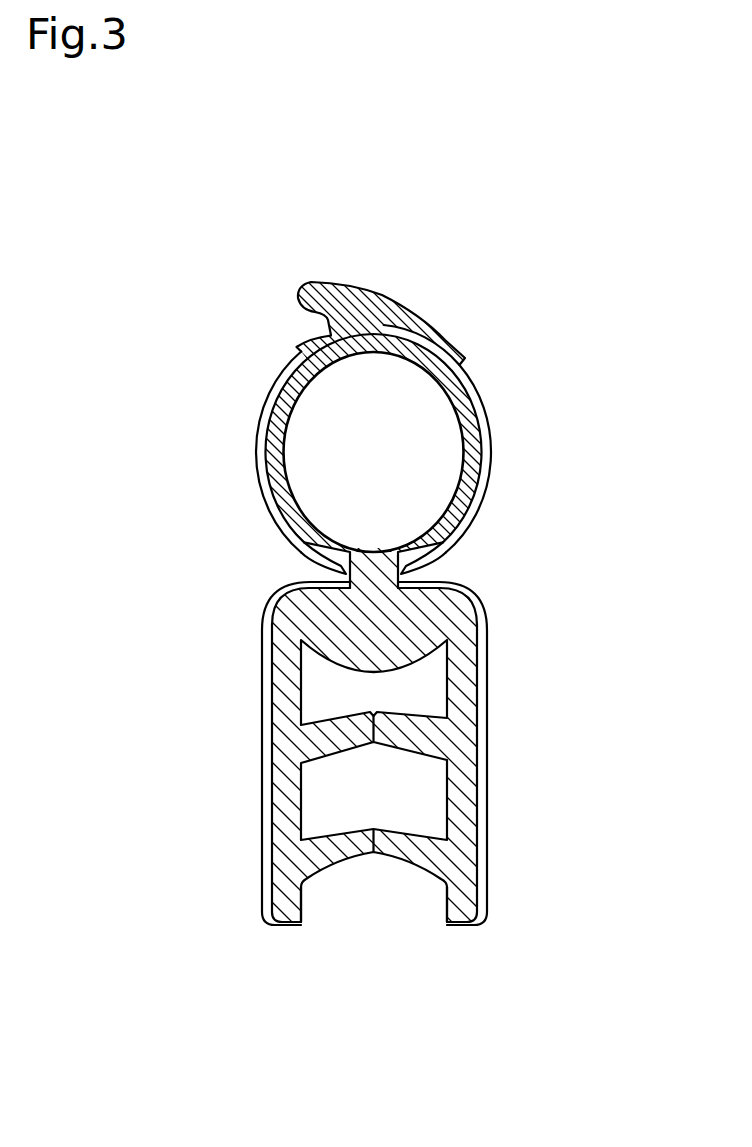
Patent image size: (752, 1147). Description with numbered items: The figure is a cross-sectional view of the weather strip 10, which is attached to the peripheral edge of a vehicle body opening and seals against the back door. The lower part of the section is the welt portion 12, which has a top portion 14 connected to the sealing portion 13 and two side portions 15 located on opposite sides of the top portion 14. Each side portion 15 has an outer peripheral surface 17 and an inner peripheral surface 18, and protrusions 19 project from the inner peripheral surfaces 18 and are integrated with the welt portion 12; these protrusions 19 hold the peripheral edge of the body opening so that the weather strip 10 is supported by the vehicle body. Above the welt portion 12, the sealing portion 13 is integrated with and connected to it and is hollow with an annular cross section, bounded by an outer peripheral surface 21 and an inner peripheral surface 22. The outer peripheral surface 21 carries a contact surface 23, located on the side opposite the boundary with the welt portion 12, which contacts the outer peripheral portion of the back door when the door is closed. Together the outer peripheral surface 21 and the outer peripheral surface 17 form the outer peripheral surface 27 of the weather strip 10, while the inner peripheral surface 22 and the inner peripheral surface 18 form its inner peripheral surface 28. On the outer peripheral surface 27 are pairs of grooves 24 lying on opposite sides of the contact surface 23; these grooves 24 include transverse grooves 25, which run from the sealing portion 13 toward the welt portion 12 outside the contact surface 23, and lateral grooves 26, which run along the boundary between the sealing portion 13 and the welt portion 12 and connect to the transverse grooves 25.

The weather strip 10 is at (273, 245).
The welt portion 12 is at (293, 608).
The sealing portion 13 is at (303, 352).
The top portion 14 is at (447, 615).
The side portions 15 is at (288, 772).
The outer peripheral surface 17 is at (263, 660).
The inner peripheral surface 18 is at (305, 692).
The protrusions 19 is at (348, 743).
The outer peripheral surface 21 is at (263, 475).
The inner peripheral surface 22 is at (290, 418).
The contact surface 23 is at (400, 302).
The grooves 24 is at (266, 387).
The transverse grooves 25 is at (288, 425).
The lateral grooves 26 is at (300, 553).
The outer peripheral surface 27 is at (130, 463).
The inner peripheral surface 28 is at (404, 400).